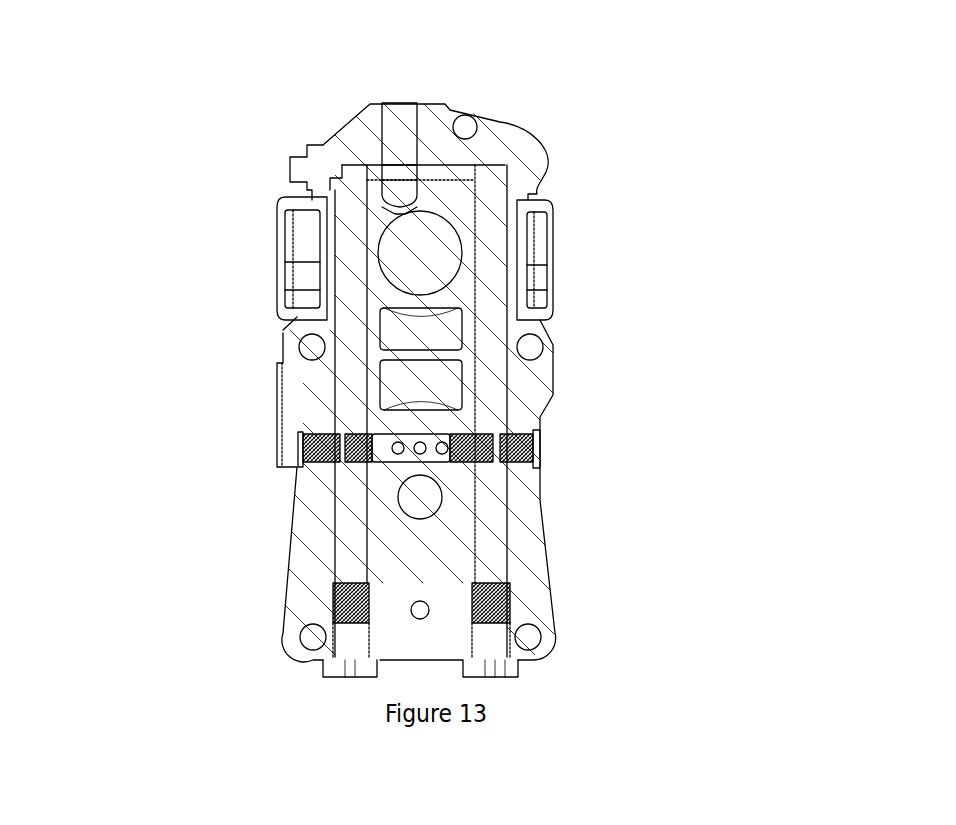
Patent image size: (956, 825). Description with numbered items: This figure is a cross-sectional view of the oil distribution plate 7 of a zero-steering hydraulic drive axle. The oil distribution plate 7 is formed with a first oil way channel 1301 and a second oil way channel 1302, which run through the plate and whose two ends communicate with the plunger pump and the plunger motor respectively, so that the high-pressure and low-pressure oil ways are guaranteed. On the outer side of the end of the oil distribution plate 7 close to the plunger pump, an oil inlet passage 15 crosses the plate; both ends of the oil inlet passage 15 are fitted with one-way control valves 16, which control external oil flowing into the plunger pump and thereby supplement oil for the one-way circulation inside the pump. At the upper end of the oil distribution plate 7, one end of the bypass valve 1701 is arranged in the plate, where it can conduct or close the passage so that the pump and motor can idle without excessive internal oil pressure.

The bypass valve 1701 is at (410, 134).
The oil distribution plate 7 is at (455, 190).
The oil inlet passage 15 is at (417, 443).
The first oil way channel 1301 is at (348, 397).
The second oil way channel 1302 is at (497, 377).
The one-way control valves 16 is at (443, 452).